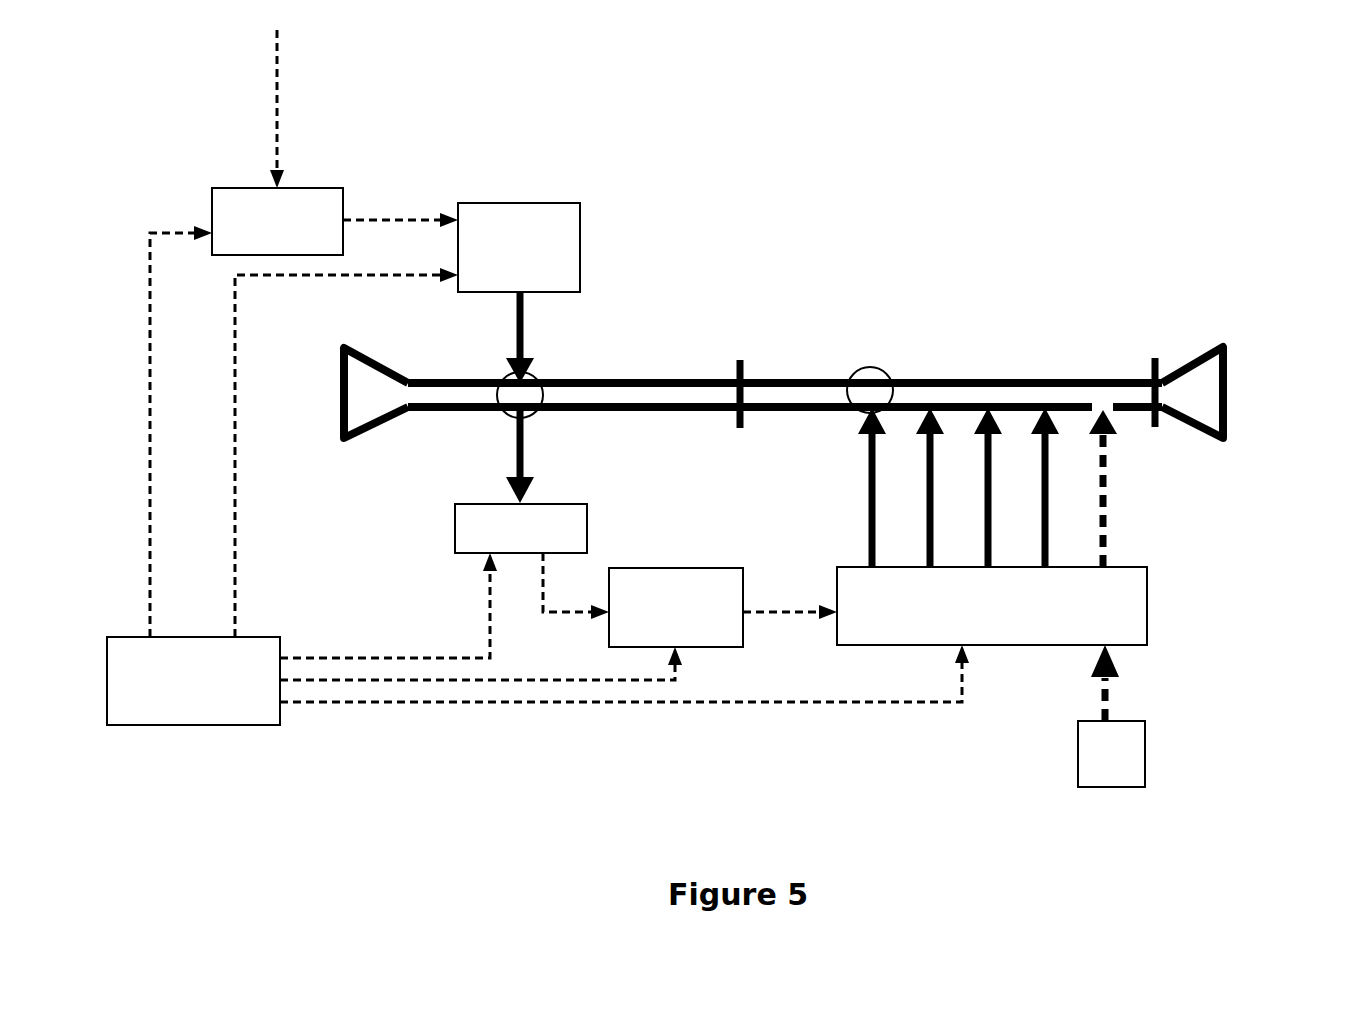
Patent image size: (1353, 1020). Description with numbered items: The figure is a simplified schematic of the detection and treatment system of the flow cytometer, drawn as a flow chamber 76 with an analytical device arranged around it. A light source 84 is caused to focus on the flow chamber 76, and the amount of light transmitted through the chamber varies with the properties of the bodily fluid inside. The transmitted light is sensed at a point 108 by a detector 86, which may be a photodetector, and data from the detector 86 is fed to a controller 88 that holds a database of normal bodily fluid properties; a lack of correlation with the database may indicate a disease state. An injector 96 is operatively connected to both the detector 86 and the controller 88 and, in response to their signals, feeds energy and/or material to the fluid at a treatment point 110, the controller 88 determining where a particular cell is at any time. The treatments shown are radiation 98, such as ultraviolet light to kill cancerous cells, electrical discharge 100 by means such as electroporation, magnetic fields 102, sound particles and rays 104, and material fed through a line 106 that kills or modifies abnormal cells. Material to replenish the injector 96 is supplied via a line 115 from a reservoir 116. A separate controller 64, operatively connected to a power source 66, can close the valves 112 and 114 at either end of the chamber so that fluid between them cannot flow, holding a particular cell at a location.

The controller 64 is at (212, 207).
The power source 66 is at (280, 645).
The flow chamber 76 is at (1225, 388).
The light source 84 is at (580, 228).
The detector 86 is at (455, 530).
The controller 88 is at (733, 647).
The injector 96 is at (1030, 645).
The radiation 98 is at (867, 480).
The electrical discharge 100 is at (924, 478).
The magnetic fields 102 is at (983, 478).
The sound particles and rays 104 is at (1040, 478).
The line 106 is at (1095, 478).
The point 108 is at (537, 378).
The point 110 is at (870, 367).
The valve 112 is at (745, 362).
The valve 114 is at (1162, 365).
The line 115 is at (1118, 675).
The reservoir 116 is at (1078, 747).